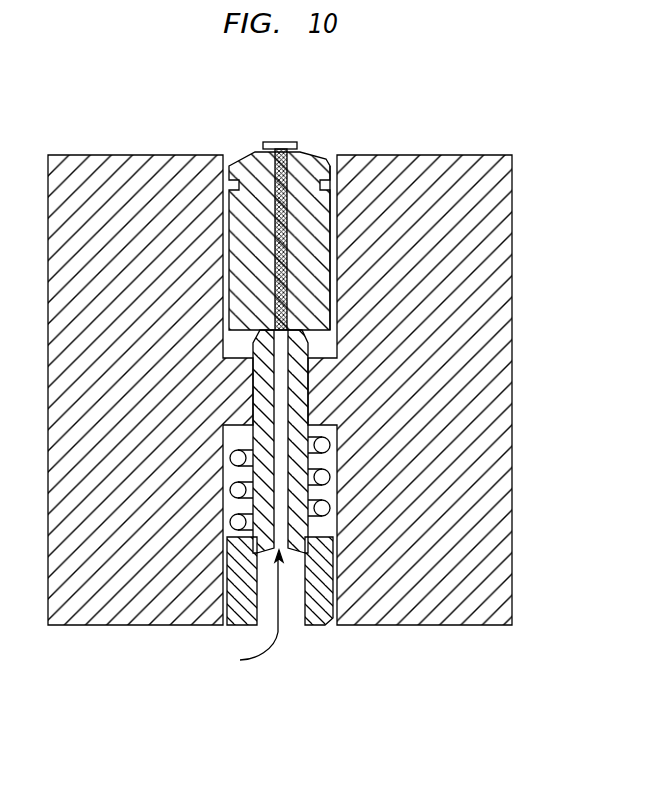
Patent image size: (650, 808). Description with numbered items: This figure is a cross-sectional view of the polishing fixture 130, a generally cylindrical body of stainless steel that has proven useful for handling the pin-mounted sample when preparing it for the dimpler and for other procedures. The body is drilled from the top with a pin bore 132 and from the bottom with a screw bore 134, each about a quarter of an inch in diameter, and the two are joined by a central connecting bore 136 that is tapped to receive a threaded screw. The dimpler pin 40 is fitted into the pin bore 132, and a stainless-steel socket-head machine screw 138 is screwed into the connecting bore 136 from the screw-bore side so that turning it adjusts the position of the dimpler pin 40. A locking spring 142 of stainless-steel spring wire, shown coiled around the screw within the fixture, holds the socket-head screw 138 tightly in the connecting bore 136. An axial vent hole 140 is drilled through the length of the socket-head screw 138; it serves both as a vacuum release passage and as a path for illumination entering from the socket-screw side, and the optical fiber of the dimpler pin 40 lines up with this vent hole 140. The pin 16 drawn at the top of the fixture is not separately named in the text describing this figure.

The polishing fixture 130 is at (115, 629).
The screw bore 134 is at (337, 613).
The dimpler pin 40 is at (245, 157).
The pin / electrode rod 16 is at (287, 142).
The pin bore 132 is at (330, 170).
The central connecting bore 136 is at (308, 390).
The socket-head machine screw 138 is at (316, 627).
The locking spring 142 is at (322, 477).
The vent hole 140 is at (240, 660).